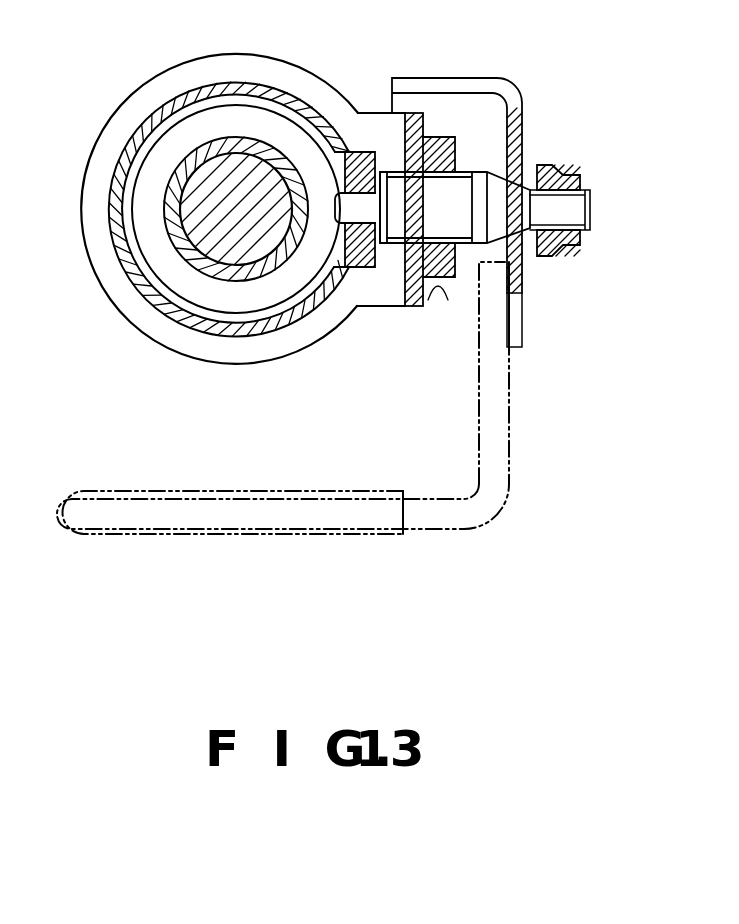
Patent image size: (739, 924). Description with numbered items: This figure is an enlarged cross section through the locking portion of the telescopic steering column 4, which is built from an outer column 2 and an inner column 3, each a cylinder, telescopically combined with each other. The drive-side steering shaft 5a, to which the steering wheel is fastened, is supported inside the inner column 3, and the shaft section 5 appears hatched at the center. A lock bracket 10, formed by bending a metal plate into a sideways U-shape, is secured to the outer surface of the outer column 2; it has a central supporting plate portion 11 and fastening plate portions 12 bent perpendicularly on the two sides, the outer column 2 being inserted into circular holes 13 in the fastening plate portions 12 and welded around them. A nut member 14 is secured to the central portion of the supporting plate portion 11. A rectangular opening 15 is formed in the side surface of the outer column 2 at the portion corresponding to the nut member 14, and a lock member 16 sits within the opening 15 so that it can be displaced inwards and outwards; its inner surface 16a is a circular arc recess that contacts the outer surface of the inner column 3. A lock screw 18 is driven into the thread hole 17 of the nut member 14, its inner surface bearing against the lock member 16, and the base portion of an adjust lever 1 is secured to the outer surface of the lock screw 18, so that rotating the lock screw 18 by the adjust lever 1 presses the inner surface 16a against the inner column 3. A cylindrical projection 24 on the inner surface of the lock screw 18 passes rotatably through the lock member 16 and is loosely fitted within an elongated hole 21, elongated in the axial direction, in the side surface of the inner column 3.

The adjust lever 1 is at (312, 537).
The outer column 2 is at (165, 92).
The inner column 3 is at (108, 166).
The steering column 4 is at (221, 201).
The inner sleeve 5 is at (188, 258).
The drive-side steering shaft 5a is at (175, 238).
The lock bracket 10 is at (459, 204).
The supporting plate portion 11 is at (457, 110).
The fastening plate portions 12 is at (368, 128).
The circular holes 13 is at (237, 83).
The nut member 14 is at (458, 116).
The rectangular opening 15 is at (368, 262).
The lock member 16 is at (400, 303).
The inner surface 16a is at (340, 312).
The thread hole 17 is at (437, 280).
The lock screw 18 is at (455, 207).
The elongated hole 21 is at (352, 106).
The cylindrical projection 24 is at (333, 240).